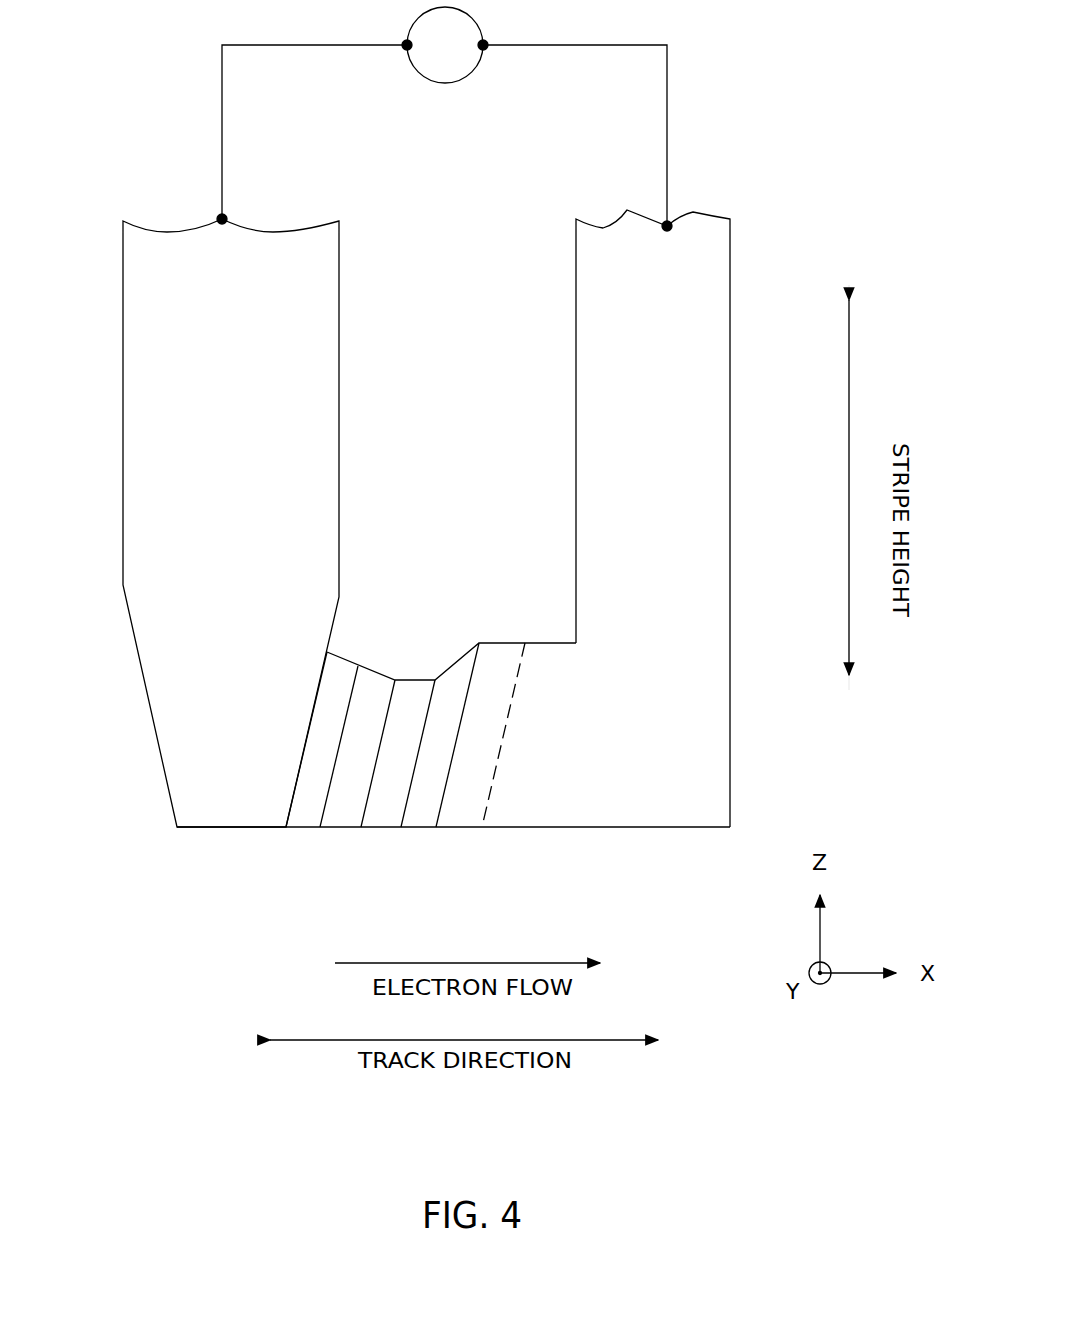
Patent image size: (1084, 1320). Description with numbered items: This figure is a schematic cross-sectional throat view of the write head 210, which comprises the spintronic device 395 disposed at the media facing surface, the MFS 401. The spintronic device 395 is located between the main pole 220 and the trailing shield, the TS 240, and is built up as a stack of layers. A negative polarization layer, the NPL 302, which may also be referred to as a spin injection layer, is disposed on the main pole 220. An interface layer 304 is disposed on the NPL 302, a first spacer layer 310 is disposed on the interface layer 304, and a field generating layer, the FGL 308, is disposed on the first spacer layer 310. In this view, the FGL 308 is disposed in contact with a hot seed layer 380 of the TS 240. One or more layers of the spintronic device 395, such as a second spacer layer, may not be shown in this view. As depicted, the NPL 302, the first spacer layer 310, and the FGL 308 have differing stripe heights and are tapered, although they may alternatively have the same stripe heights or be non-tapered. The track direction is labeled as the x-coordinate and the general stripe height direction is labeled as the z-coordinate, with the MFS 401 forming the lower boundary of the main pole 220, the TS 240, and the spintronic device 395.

The write head 210 is at (165, 152).
The main pole 220 is at (252, 490).
The trailing shield 240 is at (677, 490).
The media facing surface 401 is at (453, 844).
The spintronic device 395 is at (377, 633).
The negative polarization layer 302 is at (347, 653).
The interface layer 304 is at (385, 663).
The first spacer layer 310 is at (383, 810).
The field generating layer 308 is at (422, 810).
The hot seed layer 380 is at (462, 808).